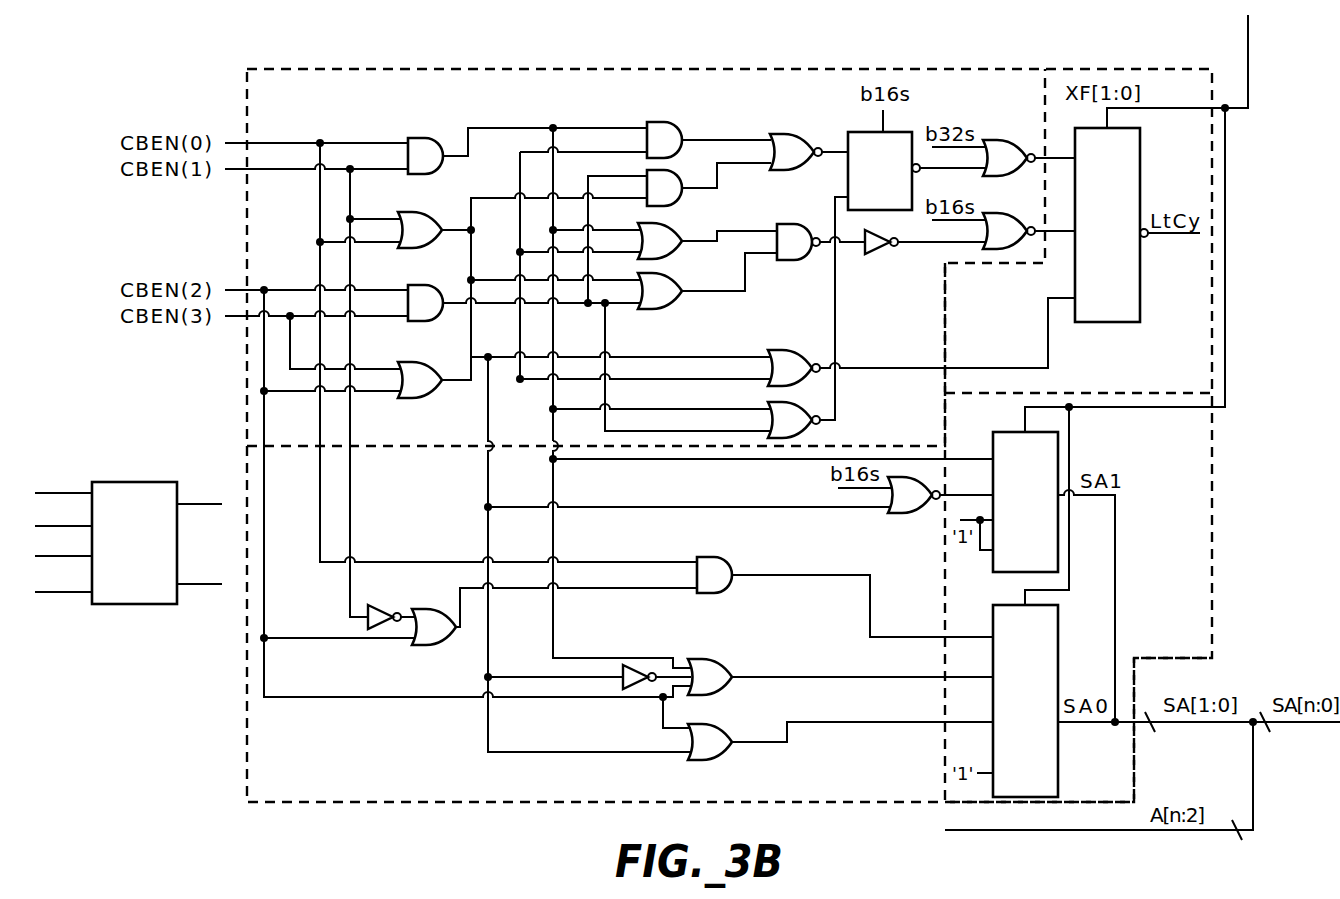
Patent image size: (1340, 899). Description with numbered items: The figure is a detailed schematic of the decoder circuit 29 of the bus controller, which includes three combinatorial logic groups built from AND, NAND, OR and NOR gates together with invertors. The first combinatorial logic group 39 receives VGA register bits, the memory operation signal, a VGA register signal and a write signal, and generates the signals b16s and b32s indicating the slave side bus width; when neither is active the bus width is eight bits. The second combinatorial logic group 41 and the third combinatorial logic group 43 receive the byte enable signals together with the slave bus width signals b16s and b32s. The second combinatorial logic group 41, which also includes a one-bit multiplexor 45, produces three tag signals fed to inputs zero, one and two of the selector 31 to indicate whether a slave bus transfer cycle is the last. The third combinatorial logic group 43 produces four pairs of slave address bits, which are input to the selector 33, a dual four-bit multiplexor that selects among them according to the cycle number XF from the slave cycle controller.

The decoder circuit 29 is at (248, 815).
The selector 31 is at (1215, 322).
The selector 33 is at (1213, 581).
The first combinatorial logic group 39 is at (128, 482).
The second combinatorial logic group 41 is at (245, 100).
The third combinatorial logic group 43 is at (338, 806).
The 1-bit multiplexor 45 is at (870, 130).